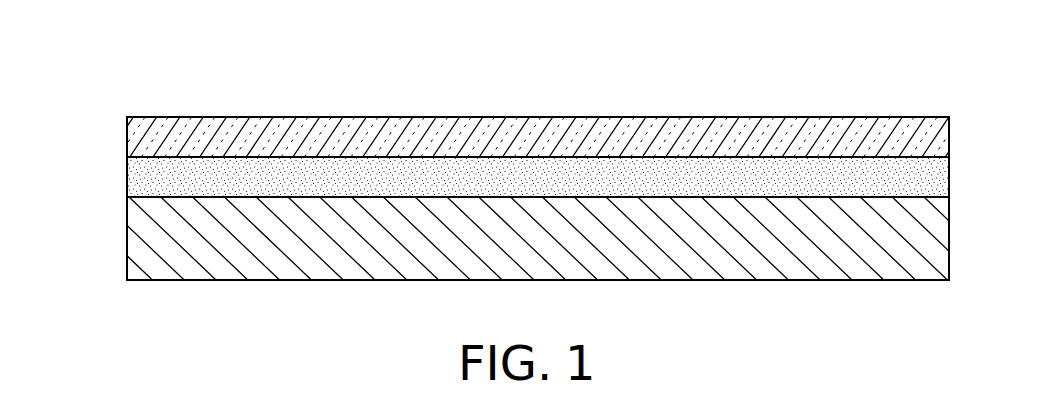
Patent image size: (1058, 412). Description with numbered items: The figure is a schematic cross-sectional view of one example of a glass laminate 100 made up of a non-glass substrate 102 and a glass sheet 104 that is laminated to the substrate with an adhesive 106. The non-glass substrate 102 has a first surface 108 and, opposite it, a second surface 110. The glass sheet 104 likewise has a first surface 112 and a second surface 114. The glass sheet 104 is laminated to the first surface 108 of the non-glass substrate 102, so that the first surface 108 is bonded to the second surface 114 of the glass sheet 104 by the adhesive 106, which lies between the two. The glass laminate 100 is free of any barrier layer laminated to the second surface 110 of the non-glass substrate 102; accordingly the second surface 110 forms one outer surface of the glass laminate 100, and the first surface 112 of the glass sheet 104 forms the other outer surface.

The glass laminate 100 is at (115, 87).
The non-glass substrate 102 is at (142, 250).
The glass sheet 104 is at (190, 118).
The adhesive 106 is at (142, 180).
The first surface 108 is at (400, 192).
The second surface 110 is at (168, 280).
The first surface 112 is at (578, 113).
The second surface 114 is at (305, 152).